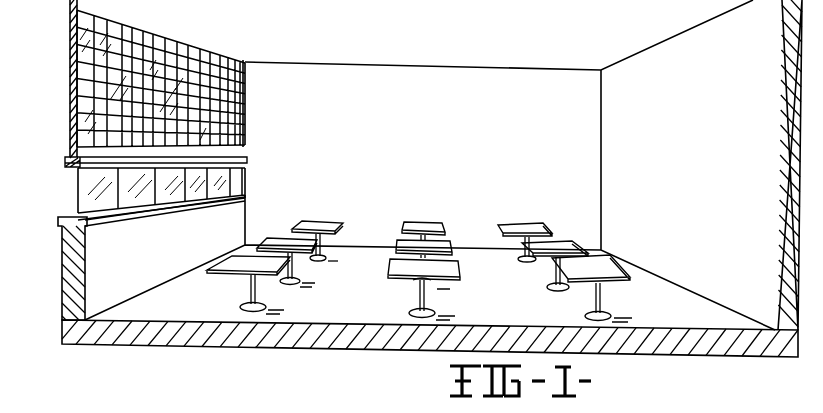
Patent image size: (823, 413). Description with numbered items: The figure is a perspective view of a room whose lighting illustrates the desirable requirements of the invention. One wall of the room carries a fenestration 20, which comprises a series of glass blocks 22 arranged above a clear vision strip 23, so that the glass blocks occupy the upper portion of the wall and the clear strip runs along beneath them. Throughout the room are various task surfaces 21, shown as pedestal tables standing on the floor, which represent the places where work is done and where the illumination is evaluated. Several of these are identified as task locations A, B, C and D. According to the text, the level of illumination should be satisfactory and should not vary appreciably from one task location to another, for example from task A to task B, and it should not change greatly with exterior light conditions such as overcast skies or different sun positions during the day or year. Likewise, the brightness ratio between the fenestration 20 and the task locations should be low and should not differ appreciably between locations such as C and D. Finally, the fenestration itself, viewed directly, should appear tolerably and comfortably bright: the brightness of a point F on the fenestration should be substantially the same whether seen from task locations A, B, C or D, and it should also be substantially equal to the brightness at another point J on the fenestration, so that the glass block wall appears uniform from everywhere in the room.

The fenestration 20 is at (154, 79).
The glass blocks 22 is at (75, 16).
The clear vision strip 23 is at (77, 200).
The point on the fenestration F is at (178, 62).
The point on the fenestration J is at (241, 109).
The task location A is at (327, 221).
The task location B is at (458, 268).
The task location C is at (233, 268).
The task location D is at (537, 228).
The task surfaces 21 is at (503, 212).